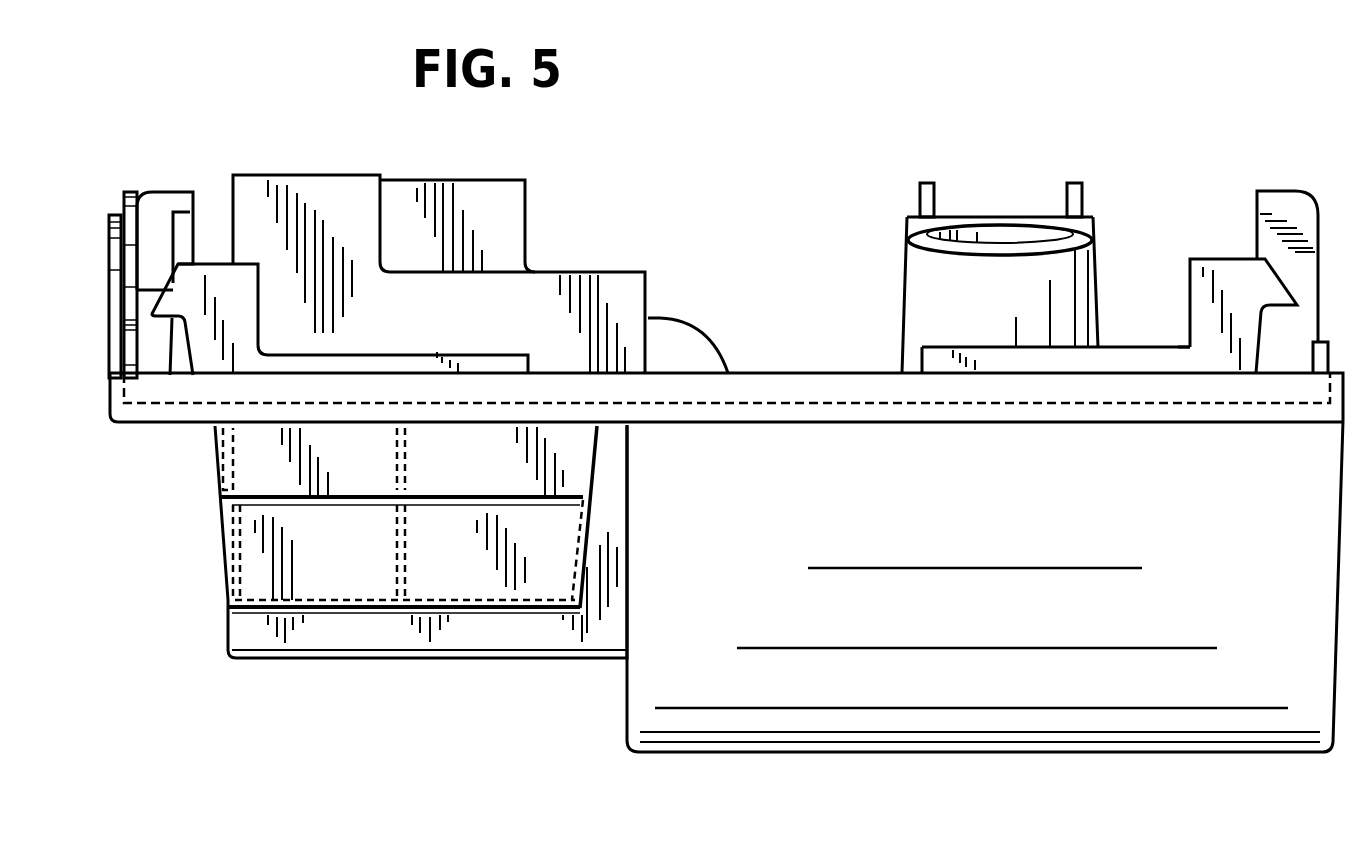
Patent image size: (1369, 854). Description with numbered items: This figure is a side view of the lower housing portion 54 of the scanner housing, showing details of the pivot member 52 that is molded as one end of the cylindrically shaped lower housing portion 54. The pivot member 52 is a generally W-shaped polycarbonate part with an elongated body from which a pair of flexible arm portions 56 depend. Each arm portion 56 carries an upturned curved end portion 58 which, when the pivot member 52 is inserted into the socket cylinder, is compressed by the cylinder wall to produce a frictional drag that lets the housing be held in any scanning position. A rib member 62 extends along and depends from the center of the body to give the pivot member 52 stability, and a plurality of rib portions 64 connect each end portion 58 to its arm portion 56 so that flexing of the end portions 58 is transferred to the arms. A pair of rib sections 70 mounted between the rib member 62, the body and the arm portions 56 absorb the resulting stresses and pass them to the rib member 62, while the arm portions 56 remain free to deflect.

The pivot member 52 is at (252, 660).
The lower housing portion 54 is at (647, 723).
The flexible arm portions 56 is at (257, 490).
The upturned curved end portions 58 is at (252, 582).
The rib member 62 is at (366, 635).
The rib portions 64 is at (387, 523).
The rib sections 70 is at (213, 453).